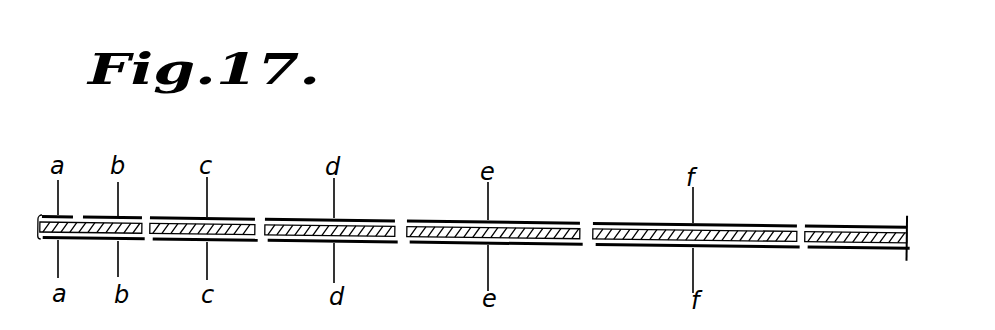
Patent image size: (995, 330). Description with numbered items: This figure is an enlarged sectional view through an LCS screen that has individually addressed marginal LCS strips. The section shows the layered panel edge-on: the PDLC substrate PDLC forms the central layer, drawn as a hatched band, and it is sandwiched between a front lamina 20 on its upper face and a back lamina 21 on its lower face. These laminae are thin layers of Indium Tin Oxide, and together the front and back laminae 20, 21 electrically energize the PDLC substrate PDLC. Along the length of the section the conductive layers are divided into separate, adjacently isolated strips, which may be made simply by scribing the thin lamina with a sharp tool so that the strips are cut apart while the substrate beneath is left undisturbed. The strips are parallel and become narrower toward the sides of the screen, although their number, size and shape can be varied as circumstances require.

The front lamina 20 is at (882, 227).
The back lamina 21 is at (849, 251).
The PDLC substrate PDLC is at (776, 232).